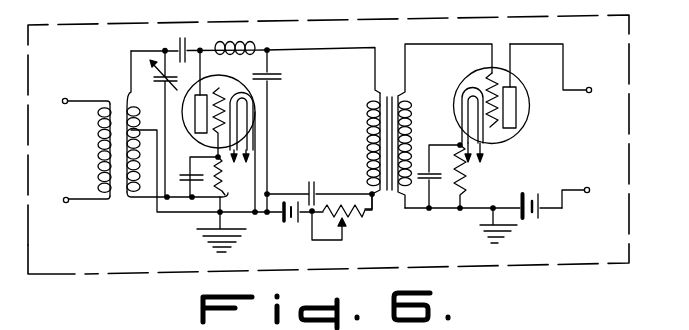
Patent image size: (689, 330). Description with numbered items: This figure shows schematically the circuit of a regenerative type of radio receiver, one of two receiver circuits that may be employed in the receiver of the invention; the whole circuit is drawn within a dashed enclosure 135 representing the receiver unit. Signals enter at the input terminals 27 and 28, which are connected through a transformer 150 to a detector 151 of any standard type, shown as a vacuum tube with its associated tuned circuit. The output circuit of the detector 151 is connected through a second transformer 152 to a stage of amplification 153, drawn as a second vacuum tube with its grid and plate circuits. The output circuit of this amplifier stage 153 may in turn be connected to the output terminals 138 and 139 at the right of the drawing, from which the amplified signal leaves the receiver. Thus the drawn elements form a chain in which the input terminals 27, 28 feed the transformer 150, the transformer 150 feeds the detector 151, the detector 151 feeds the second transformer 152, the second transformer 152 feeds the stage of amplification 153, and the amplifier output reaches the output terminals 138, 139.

The input terminal 27 is at (62, 201).
The input terminal 28 is at (61, 100).
The receiver unit (dashed enclosure) 135 is at (143, 272).
The output terminal 138 is at (590, 169).
The output terminal 139 is at (589, 93).
The transformer 150 is at (120, 196).
The detector 151 is at (313, 140).
The second transformer 152 is at (390, 197).
The stage of amplification 153 is at (564, 146).